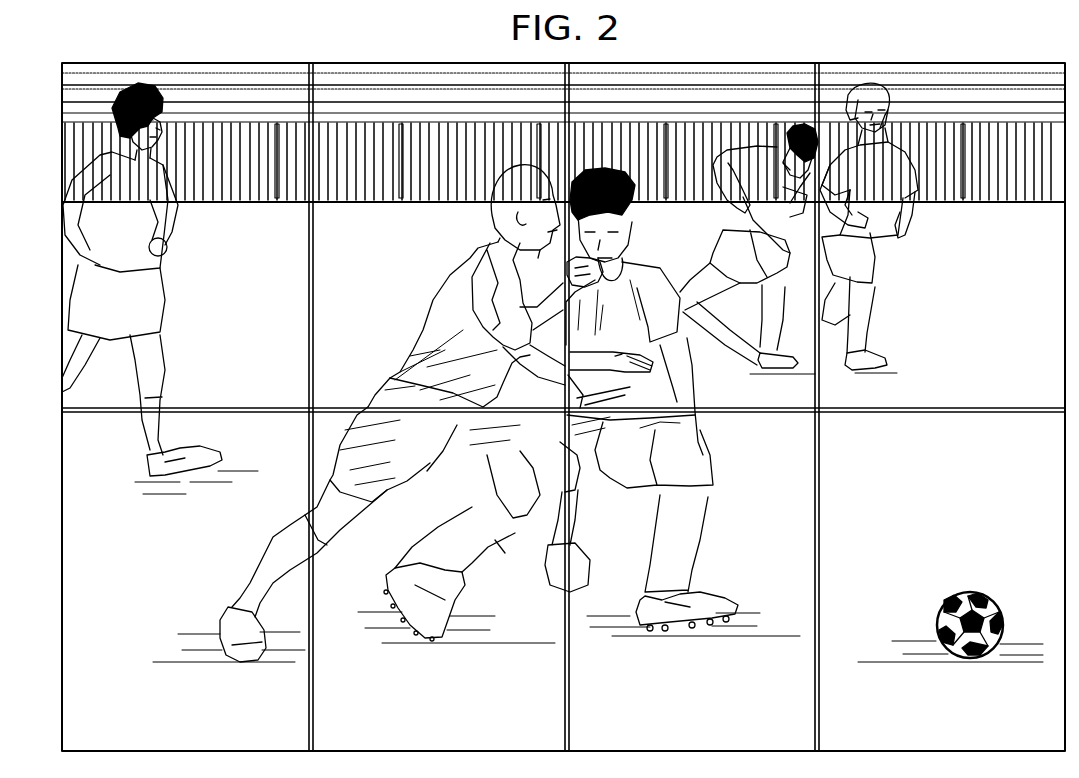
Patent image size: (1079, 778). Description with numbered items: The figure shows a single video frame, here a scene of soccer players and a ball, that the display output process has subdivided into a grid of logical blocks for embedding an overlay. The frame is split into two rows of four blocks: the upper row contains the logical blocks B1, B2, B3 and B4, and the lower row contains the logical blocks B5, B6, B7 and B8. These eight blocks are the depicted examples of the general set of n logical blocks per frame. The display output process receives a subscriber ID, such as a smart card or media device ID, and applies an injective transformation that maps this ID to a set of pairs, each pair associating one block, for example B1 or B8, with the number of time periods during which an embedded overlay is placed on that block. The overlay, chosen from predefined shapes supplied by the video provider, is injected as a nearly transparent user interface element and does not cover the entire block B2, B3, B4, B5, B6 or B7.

The logical block B1 is at (142, 279).
The logical block B2 is at (466, 286).
The logical block B3 is at (692, 289).
The logical block B4 is at (895, 228).
The logical block B5 is at (261, 566).
The logical block B6 is at (460, 525).
The logical block B7 is at (680, 525).
The logical block B8 is at (950, 611).